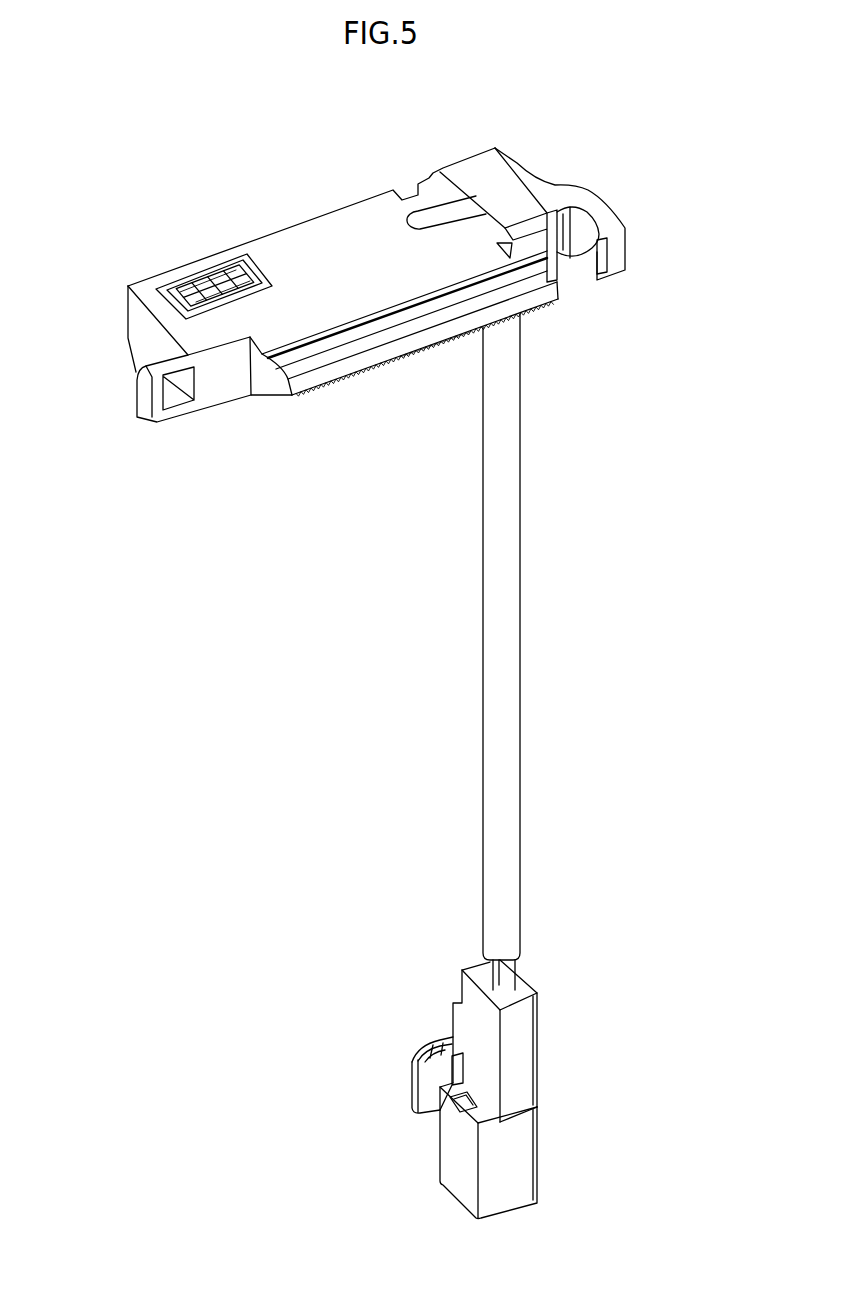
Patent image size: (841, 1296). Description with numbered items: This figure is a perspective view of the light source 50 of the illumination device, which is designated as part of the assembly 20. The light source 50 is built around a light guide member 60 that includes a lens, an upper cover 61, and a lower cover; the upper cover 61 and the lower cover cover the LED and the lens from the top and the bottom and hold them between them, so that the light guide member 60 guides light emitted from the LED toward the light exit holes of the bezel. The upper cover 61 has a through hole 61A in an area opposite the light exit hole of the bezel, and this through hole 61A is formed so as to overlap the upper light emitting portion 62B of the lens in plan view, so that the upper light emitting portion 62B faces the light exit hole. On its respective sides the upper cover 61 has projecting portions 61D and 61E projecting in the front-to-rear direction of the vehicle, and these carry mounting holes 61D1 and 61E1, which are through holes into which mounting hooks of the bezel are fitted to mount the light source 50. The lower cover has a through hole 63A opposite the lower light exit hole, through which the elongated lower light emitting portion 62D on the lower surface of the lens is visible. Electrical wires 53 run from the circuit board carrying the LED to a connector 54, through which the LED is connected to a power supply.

The sensor unit 20 is at (366, 647).
The light source 50 is at (556, 327).
The electrical wires 53 is at (505, 469).
The connector 54 is at (525, 1044).
The light guide member 60 is at (366, 278).
The upper cover 61 is at (365, 220).
The through hole 61A is at (235, 278).
The projecting portion 61D is at (165, 356).
The mounting hole 61D1 is at (168, 396).
The projecting portion 61E is at (598, 213).
The mounting hole 61E1 is at (573, 263).
The upper light emitting portion 62B is at (203, 288).
The lower light emitting portion 62D is at (338, 385).
The through hole 63A is at (433, 349).